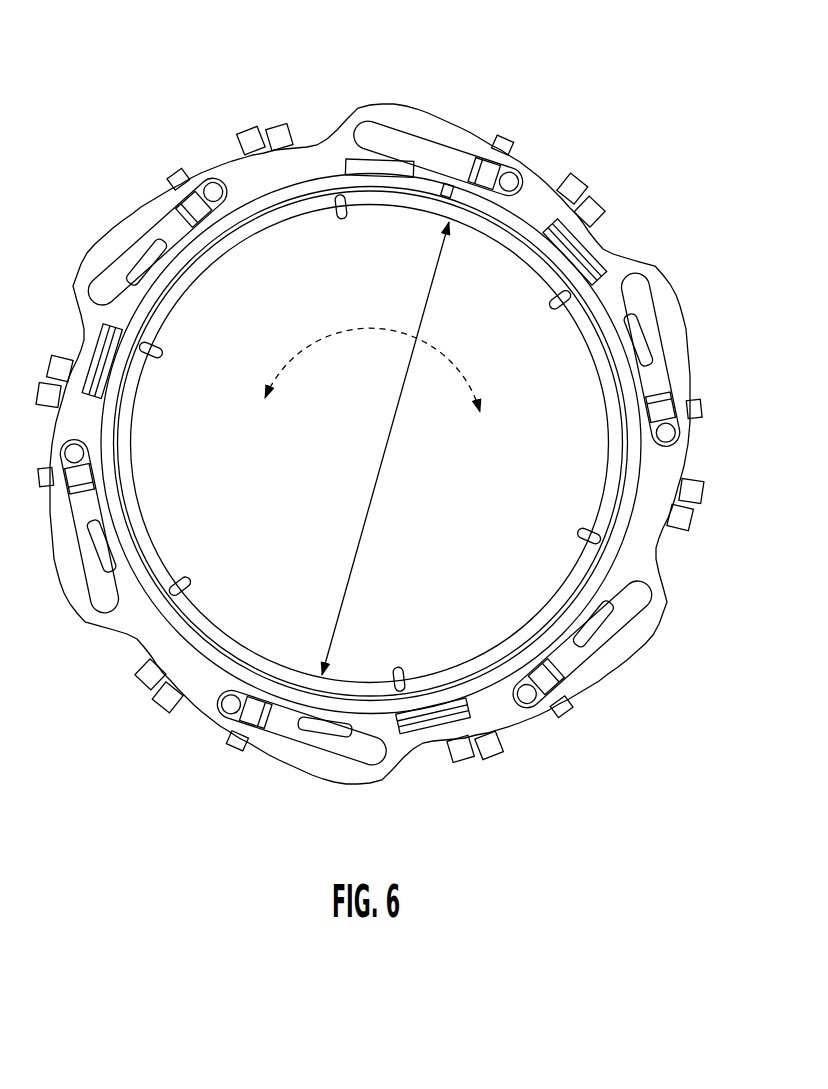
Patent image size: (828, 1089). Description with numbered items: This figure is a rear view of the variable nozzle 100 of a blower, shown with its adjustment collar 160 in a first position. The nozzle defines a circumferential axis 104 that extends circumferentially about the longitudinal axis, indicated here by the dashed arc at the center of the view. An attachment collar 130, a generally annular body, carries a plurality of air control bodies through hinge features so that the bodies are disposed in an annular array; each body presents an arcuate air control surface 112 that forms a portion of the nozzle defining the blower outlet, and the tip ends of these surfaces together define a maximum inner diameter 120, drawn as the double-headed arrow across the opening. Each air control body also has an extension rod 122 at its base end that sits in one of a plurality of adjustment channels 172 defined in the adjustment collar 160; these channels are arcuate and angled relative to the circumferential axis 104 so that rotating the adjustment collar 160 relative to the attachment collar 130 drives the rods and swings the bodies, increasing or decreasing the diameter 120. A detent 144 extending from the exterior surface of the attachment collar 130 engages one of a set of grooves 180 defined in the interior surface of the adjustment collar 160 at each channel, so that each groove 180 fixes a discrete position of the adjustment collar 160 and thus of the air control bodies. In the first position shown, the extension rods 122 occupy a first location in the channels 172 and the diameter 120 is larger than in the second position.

The variable nozzle 100 is at (143, 133).
The adjustment collar 160 is at (370, 405).
The adjustment channel 172 is at (455, 152).
The extension rod 122 is at (519, 180).
The air control surface 112 is at (338, 226).
The groove 180 is at (448, 193).
The detent 144 is at (474, 196).
The attachment collar 130 is at (361, 441).
The circumferential axis 104 is at (337, 330).
The maximum inner diameter 120 is at (380, 487).